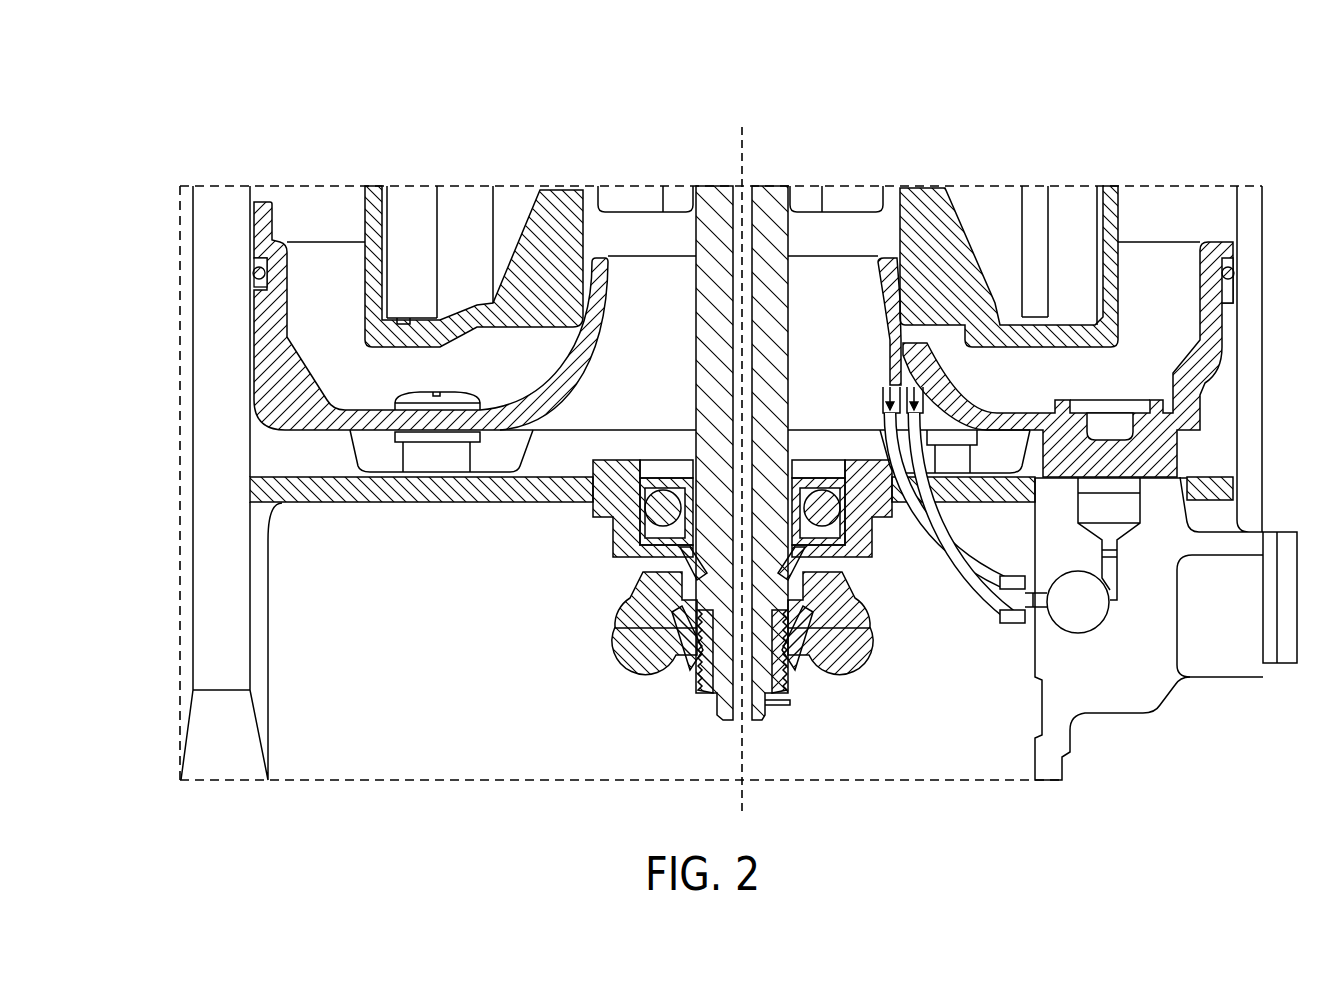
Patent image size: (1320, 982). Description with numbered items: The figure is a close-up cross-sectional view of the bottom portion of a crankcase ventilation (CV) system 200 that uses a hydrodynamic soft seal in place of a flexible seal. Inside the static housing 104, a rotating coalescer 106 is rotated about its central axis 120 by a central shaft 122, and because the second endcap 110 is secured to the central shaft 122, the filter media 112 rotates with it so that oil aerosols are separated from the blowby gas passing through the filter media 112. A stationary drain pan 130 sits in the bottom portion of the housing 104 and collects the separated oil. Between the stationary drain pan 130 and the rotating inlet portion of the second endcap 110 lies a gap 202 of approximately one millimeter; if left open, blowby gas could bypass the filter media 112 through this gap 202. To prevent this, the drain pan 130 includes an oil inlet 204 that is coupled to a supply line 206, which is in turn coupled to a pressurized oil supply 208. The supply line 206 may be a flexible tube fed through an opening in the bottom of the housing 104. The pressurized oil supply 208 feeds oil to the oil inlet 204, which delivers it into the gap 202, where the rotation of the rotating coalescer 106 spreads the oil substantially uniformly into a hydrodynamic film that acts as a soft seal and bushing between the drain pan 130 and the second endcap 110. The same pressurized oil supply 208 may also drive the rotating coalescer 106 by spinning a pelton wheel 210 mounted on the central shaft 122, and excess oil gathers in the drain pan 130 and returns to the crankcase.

The housing 104 is at (212, 574).
The rotating coalescer 106 is at (328, 214).
The second endcap 110 is at (380, 333).
The filter media 112 is at (400, 277).
The central axis 120 is at (745, 142).
The central shaft 122 is at (768, 215).
The drain pan 130 is at (272, 400).
The CV system 200 is at (240, 94).
The gap 202 is at (905, 235).
The oil inlet 204 is at (893, 372).
The supply line 206 is at (950, 583).
The pressurized oil supply 208 is at (1016, 592).
The pelton wheel 210 is at (648, 620).